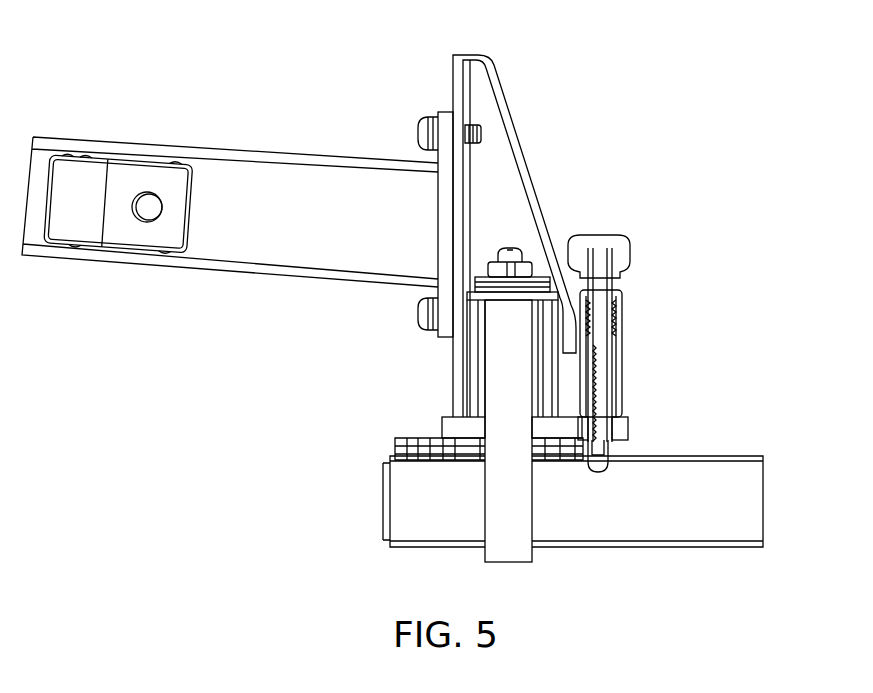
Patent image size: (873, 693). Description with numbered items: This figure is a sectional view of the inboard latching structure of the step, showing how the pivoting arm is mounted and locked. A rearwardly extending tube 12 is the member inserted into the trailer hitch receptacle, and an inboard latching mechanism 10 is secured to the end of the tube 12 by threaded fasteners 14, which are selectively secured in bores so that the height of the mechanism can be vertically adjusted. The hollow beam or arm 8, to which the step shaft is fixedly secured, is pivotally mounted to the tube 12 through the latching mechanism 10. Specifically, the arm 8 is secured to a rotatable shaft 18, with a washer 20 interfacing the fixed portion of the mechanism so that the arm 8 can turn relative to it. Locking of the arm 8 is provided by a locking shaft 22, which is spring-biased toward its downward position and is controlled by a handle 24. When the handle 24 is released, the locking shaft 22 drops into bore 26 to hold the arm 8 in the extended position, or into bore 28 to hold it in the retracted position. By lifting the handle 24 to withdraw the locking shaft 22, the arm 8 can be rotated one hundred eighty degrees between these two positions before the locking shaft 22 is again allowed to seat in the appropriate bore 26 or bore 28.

The hollow beam or arm 8 is at (708, 455).
The inboard latching mechanism 10 is at (583, 156).
The rearwardly extending tube 12 is at (232, 150).
The threaded fasteners 14 is at (424, 128).
The rotatable shaft 18 is at (512, 556).
The washer 20 is at (402, 450).
The locking shaft 22 is at (600, 377).
The handle 24 is at (624, 246).
The bore 26 is at (592, 460).
The bore 28 is at (402, 440).